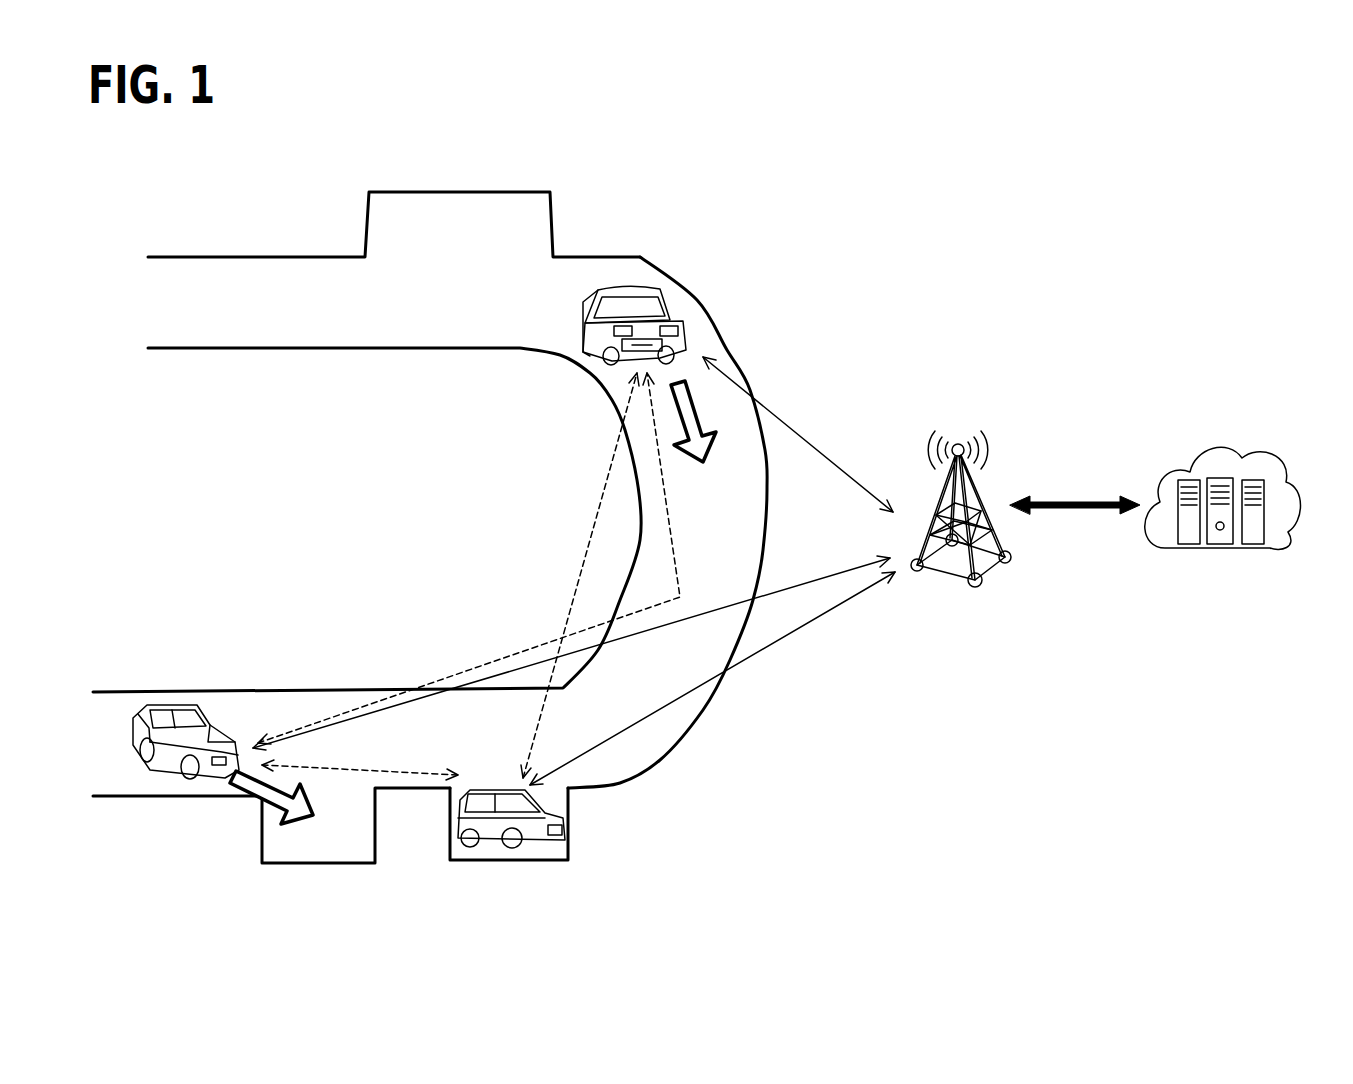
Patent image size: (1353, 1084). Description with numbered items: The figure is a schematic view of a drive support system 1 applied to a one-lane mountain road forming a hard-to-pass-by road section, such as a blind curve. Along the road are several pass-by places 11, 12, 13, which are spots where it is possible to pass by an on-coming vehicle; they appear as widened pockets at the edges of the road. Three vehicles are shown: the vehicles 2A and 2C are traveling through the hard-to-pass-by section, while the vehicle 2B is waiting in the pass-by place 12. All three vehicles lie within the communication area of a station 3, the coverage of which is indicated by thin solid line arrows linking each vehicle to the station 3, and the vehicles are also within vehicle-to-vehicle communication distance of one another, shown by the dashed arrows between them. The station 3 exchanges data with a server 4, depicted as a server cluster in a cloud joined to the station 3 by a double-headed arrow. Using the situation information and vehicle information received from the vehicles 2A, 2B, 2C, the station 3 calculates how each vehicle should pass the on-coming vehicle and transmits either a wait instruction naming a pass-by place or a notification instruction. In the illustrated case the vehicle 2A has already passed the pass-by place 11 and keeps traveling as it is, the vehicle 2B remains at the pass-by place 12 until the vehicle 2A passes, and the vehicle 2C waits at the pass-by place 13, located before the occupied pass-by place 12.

The drive support system 1 is at (1042, 202).
The vehicle 2A is at (678, 310).
The vehicle 2B is at (560, 810).
The vehicle 2C is at (206, 718).
The station 3 is at (978, 418).
The server 4 is at (1262, 450).
The pass-by place 11 is at (485, 212).
The pass-by place 12 is at (472, 847).
The pass-by place 13 is at (317, 842).